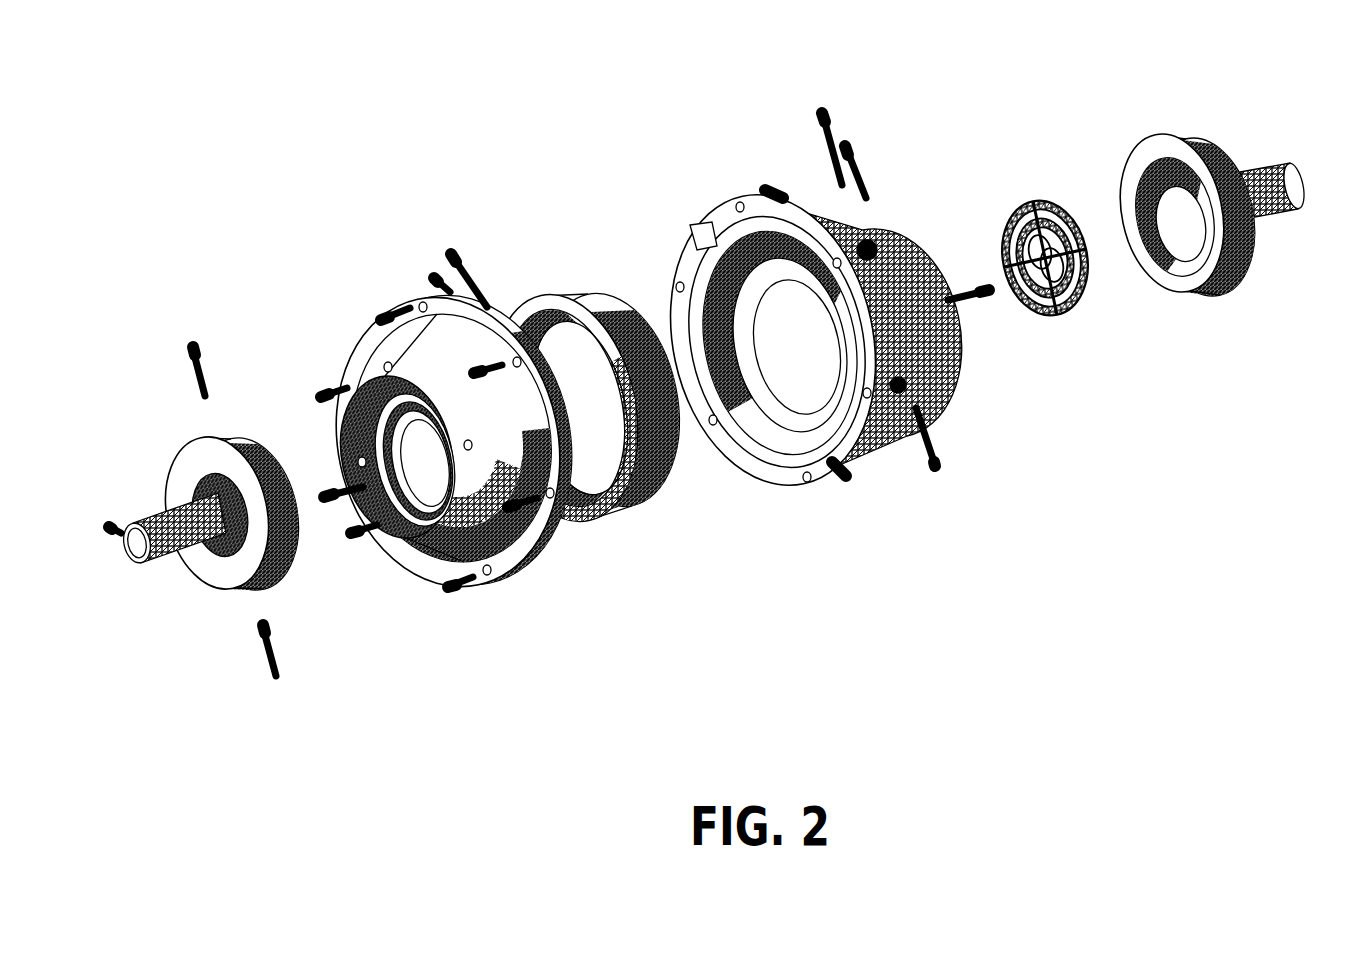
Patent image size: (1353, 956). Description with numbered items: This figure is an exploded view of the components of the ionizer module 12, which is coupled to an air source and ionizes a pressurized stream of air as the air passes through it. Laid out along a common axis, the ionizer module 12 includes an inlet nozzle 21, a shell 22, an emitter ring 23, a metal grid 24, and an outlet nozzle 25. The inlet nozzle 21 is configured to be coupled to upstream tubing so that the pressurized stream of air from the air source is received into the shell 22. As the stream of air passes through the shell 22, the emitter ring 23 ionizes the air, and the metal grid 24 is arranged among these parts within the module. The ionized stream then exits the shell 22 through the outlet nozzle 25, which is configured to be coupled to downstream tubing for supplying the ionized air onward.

The ionizer module 12 is at (216, 110).
The inlet nozzle 21 is at (232, 442).
The shell 22 is at (727, 220).
The emitter ring 23 is at (637, 495).
The metal grid 24 is at (1033, 203).
The outlet nozzle 25 is at (1190, 140).